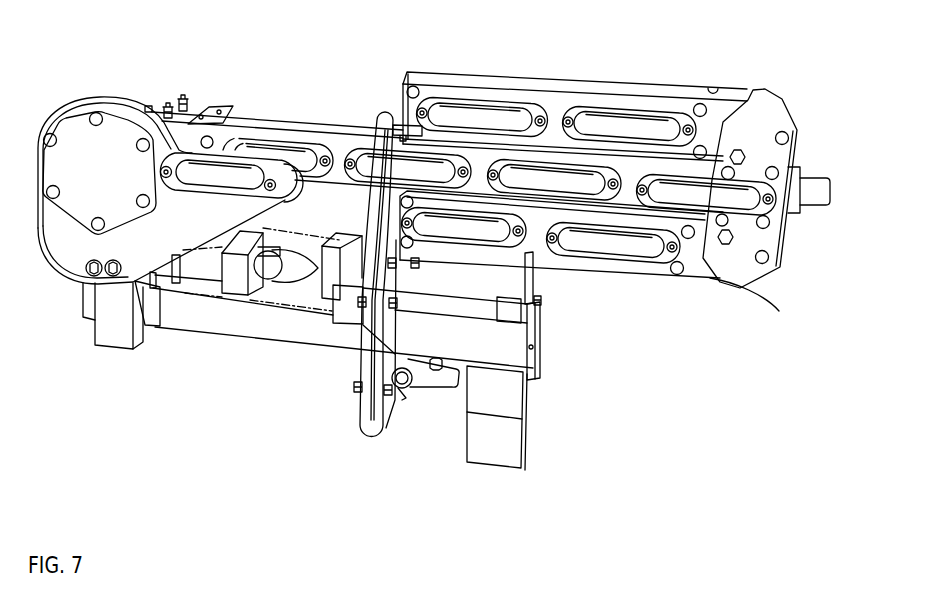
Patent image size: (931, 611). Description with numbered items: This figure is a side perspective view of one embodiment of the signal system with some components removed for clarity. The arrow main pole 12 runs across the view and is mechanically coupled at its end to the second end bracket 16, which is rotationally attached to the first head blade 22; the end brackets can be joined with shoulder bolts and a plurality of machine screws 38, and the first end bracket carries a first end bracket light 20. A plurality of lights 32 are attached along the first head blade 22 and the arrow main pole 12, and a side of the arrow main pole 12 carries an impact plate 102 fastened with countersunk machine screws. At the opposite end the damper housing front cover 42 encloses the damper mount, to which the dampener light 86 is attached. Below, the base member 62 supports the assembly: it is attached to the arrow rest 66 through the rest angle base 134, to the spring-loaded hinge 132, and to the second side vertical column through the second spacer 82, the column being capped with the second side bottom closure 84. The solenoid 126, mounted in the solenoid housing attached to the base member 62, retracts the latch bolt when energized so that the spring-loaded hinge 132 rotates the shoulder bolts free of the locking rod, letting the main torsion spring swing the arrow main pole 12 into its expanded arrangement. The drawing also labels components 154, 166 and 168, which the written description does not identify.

The damper housing front cover 42 is at (115, 133).
The impact plate 102 is at (213, 105).
The dampener light 86 is at (227, 182).
The arrow main pole 12 is at (338, 135).
The first head blade 22 is at (553, 250).
The lights 32 is at (762, 258).
The second end bracket 16 is at (725, 243).
The machine screws 38 is at (762, 258).
The first end bracket light 20 is at (810, 202).
The vertical arm 154 is at (323, 295).
The base member 62 is at (508, 348).
The arrow rest 66 is at (508, 310).
The rest angle base 134 is at (510, 350).
The spring-loaded hinge 132 is at (400, 393).
The bearing block 166 is at (242, 258).
The solenoid 126 is at (207, 265).
The guide rails 168 is at (160, 288).
The second spacer 82 is at (147, 330).
The second side bottom closure 84 is at (120, 347).